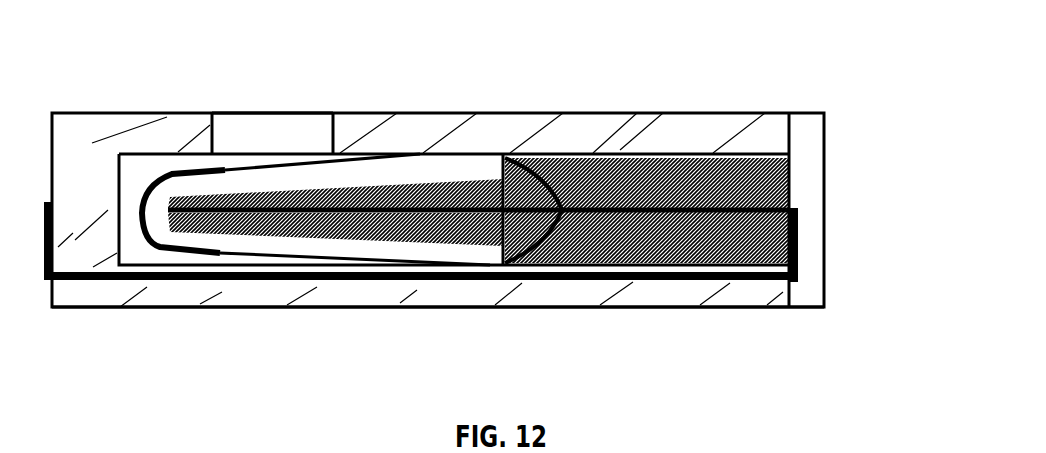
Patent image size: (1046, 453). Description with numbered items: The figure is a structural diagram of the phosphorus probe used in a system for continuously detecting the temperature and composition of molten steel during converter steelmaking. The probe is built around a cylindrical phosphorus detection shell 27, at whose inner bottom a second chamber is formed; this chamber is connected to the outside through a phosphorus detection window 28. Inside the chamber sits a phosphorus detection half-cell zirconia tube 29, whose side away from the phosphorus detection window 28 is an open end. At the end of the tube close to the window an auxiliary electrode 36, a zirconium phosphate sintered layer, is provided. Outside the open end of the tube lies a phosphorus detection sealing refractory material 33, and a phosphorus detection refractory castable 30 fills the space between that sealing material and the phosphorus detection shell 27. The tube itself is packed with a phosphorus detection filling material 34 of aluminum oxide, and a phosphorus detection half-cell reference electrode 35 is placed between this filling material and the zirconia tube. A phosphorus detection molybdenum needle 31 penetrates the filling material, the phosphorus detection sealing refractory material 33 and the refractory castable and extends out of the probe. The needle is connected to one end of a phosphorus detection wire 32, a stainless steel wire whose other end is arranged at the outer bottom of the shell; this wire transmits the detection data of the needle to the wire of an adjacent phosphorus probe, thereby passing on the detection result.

The phosphorus detection shell 27 is at (60, 196).
The phosphorus detection window 28 is at (305, 135).
The phosphorus detection half-cell zirconia tube 29 is at (450, 170).
The phosphorus detection refractory castable 30 is at (695, 157).
The phosphorus detection molybdenum needle 31 is at (797, 210).
The phosphorus detection wire 32 is at (778, 289).
The phosphorus detection sealing refractory material 33 is at (600, 280).
The phosphorus detection filling material 34 is at (432, 235).
The phosphorus detection half-cell reference electrode 35 is at (210, 233).
The auxiliary electrode 36 is at (197, 255).